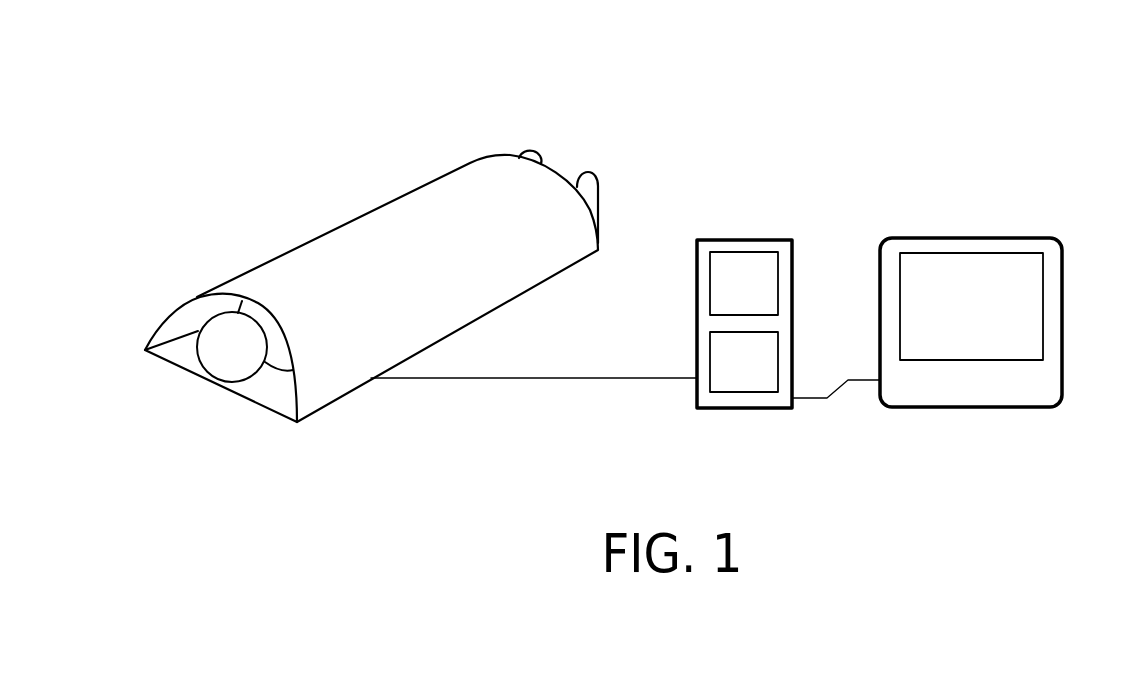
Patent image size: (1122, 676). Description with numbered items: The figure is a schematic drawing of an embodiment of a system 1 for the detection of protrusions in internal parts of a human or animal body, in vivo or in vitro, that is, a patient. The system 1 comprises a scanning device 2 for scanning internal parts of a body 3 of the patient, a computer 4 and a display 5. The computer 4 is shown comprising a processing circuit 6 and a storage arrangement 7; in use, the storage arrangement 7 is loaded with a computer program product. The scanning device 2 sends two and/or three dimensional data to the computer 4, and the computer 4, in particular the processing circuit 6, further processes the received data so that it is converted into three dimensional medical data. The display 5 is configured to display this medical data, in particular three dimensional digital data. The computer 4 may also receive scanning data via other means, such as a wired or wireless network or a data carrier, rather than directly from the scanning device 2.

The system 1 is at (877, 95).
The scanning device 2 is at (366, 184).
The body 3 is at (275, 391).
The computer 4 is at (793, 253).
The display 5 is at (961, 318).
The processing circuit 6 is at (767, 305).
The storage arrangement 7 is at (765, 347).